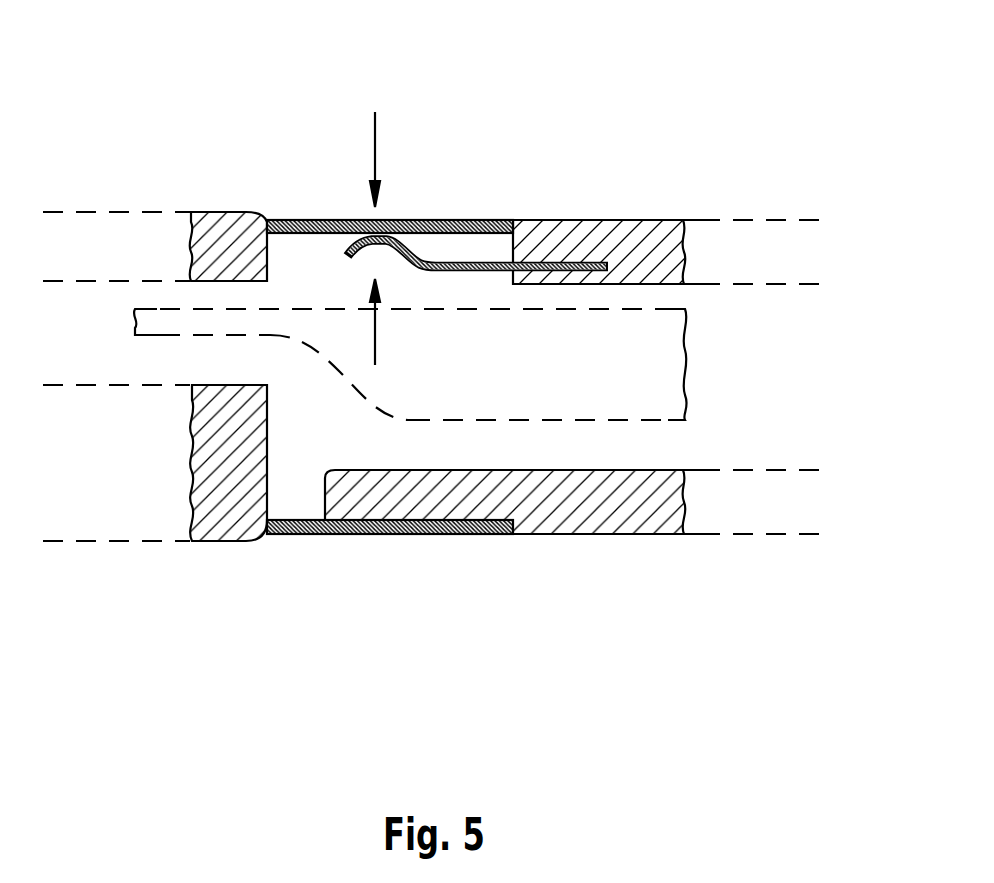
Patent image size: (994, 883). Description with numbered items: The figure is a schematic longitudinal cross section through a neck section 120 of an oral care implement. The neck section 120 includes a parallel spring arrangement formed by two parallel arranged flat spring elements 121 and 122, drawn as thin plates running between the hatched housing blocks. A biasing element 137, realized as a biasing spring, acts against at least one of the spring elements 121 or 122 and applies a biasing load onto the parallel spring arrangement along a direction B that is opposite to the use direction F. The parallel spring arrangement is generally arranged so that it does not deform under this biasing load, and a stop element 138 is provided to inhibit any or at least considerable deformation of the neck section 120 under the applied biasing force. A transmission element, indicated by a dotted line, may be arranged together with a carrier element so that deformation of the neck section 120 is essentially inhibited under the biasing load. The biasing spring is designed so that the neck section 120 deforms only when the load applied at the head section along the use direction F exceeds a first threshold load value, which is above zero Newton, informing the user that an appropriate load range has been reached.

The neck section 120 is at (444, 121).
The flat spring element 121 is at (372, 534).
The flat spring element 122 is at (322, 219).
The biasing element 137 is at (482, 266).
The stop element 138 is at (588, 508).